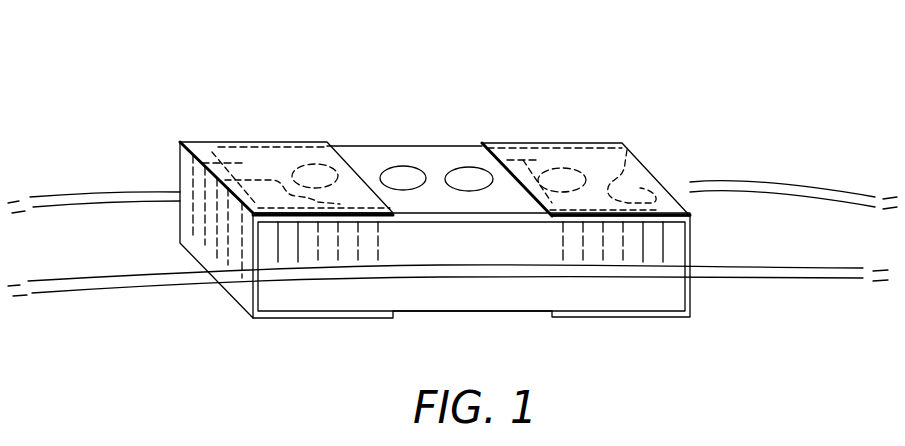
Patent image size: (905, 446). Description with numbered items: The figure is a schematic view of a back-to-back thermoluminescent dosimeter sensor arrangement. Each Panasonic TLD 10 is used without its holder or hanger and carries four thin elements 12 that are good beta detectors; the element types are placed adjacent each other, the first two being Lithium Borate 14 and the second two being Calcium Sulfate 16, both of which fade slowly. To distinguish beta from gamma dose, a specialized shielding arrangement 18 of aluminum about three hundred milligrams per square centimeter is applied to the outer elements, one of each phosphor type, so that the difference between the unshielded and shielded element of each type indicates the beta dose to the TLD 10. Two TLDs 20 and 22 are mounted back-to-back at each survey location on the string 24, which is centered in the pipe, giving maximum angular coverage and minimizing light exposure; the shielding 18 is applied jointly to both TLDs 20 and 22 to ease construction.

The TLD 10 is at (461, 165).
The element 12 is at (327, 189).
The Lithium Borate element 14 is at (386, 160).
The Calcium Sulfate element 16 is at (560, 168).
The shielding arrangement 18 is at (246, 162).
The TLD 20 is at (667, 247).
The TLD 22 is at (660, 292).
The string 24 is at (792, 267).